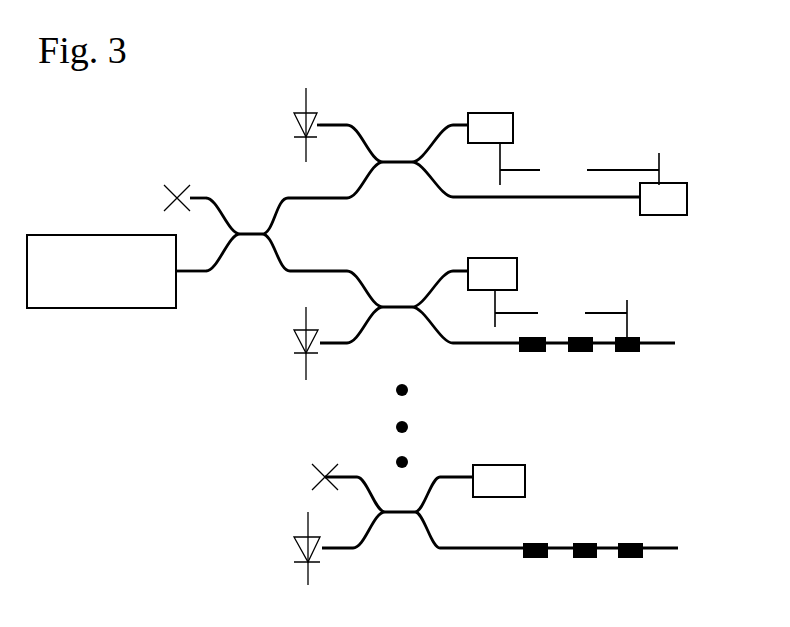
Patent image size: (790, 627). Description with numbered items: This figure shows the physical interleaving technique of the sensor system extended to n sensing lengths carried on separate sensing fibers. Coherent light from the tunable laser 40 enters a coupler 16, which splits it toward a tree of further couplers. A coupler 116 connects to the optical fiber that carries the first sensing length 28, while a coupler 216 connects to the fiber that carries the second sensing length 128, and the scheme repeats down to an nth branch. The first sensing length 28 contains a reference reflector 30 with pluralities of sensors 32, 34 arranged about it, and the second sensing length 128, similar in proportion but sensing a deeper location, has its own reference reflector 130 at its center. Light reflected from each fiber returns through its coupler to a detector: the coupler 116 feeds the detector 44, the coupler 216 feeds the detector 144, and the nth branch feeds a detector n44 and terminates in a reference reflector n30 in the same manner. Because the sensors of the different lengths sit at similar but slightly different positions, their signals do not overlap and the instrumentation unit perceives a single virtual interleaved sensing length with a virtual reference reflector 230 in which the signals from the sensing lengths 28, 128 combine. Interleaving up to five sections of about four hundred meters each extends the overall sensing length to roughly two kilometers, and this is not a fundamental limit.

The tunable laser 40 is at (101, 271).
The coupler 16 is at (248, 247).
The coupler 116 is at (400, 172).
The coupler 216 is at (400, 315).
The detector 44 is at (275, 125).
The detector 144 is at (275, 343).
The photodetector n44 is at (274, 548).
The reference reflector 30 is at (490, 128).
The reference reflector 130 is at (663, 199).
The virtual reference reflector 230 is at (492, 274).
The sensor n30 is at (499, 481).
The first sensing length 28 is at (579, 164).
The second sensing length 128 is at (561, 318).
The sensors 32 is at (579, 378).
The sensors 34 is at (583, 469).